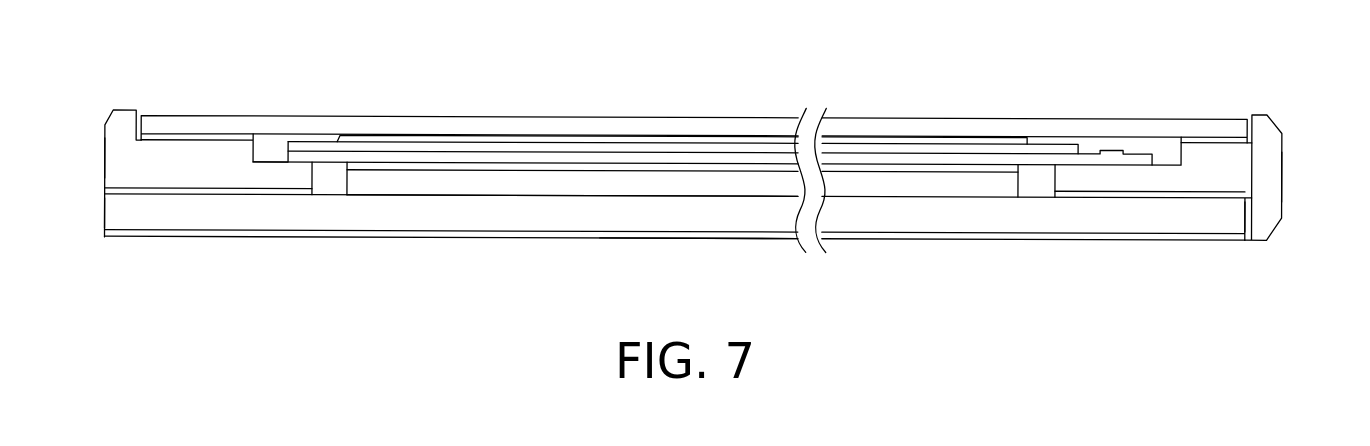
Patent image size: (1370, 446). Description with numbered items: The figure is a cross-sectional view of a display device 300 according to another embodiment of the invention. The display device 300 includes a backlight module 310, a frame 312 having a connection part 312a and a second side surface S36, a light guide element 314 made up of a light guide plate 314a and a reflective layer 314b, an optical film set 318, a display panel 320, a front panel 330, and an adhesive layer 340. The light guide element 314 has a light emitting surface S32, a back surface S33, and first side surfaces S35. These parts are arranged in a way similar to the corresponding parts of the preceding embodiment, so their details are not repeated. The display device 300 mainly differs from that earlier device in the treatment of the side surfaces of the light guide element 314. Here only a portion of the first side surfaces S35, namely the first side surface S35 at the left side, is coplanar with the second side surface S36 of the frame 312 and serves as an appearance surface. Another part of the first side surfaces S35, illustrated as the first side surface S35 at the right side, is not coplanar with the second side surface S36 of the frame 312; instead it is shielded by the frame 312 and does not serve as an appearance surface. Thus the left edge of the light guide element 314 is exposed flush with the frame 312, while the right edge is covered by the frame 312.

The display device 300 is at (1245, 30).
The backlight module 310 is at (1081, 259).
The frame 312 is at (1275, 150).
The connection part 312a is at (1180, 180).
The light guide element 314 is at (677, 267).
The light guide plate 314a is at (430, 220).
The reflective layer 314b is at (501, 233).
The optical film set 318 is at (486, 178).
The display panel 320 is at (917, 150).
The front panel 330 is at (647, 128).
The adhesive layer 340 is at (218, 137).
The light emitting surface S32 is at (728, 188).
The back surface S33 is at (727, 242).
The first side surface S35 is at (96, 215).
The second side surface S36 is at (96, 160).